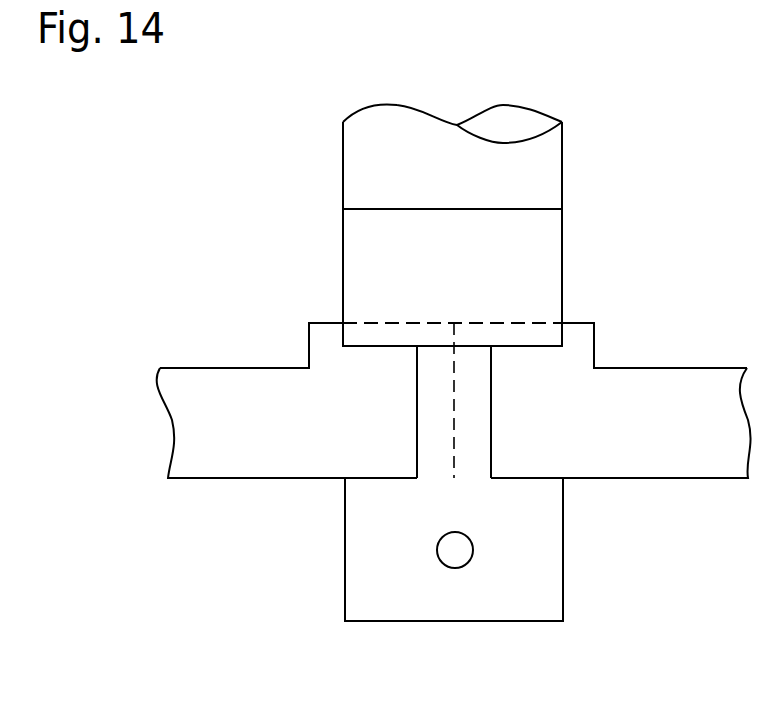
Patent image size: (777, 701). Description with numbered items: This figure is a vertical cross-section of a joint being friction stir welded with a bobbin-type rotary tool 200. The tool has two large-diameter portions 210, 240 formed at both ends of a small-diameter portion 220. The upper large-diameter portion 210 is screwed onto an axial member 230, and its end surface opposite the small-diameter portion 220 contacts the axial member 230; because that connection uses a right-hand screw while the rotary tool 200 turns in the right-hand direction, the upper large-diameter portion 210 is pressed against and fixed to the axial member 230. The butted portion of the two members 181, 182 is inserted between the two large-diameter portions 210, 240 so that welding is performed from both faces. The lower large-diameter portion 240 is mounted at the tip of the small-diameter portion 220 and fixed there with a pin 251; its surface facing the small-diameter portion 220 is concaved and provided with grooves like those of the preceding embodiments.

The rotary tool 200 is at (580, 112).
The axial member 230 is at (552, 162).
The large-diameter portion 210 is at (552, 258).
The member 181 is at (210, 383).
The member 182 is at (673, 392).
The small-diameter portion 220 is at (477, 449).
The large-diameter portion 240 is at (548, 585).
The pin 251 is at (455, 562).